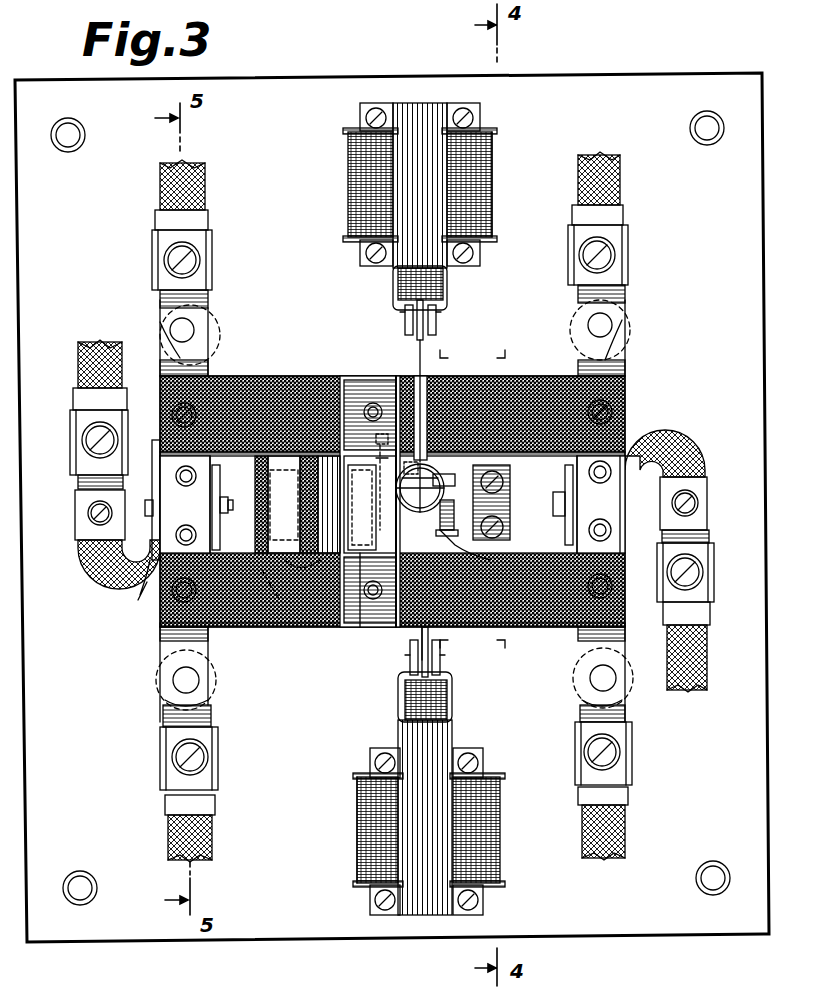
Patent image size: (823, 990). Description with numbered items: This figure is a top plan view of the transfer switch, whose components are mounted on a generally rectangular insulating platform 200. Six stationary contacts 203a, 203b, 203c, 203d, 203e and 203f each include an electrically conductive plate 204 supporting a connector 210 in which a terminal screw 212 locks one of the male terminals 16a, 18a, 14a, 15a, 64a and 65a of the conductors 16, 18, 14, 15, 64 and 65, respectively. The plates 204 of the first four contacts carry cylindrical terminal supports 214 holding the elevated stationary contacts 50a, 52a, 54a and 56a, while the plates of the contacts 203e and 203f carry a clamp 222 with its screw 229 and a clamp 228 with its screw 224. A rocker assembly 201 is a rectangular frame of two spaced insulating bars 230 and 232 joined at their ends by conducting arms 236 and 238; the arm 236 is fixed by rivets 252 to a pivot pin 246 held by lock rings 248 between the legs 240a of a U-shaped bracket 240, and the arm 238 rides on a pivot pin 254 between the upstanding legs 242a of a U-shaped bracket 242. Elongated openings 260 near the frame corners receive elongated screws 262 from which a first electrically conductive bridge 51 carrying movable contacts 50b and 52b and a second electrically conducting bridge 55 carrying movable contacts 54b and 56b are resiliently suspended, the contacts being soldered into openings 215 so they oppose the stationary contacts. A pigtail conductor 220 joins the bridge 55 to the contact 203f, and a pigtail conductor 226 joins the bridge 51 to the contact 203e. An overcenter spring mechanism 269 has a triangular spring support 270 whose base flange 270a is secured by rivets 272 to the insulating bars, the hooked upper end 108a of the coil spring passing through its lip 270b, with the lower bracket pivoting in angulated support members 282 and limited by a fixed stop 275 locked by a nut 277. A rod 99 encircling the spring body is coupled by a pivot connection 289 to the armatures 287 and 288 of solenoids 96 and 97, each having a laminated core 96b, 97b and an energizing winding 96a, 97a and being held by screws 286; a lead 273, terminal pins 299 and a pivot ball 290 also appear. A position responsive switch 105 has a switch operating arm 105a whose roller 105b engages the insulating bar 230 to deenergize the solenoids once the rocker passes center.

The insulating platform 200 is at (655, 74).
The rocker assembly 201 is at (668, 384).
The insulating bar 232 is at (272, 378).
The insulating bar 230 is at (270, 628).
The overcenter spring mechanism 269 is at (335, 378).
The spring support 270 is at (337, 620).
The base flange 270a is at (355, 628).
The lip 270b is at (421, 470).
The rivets 272 is at (370, 597).
The fixed stop 275 is at (376, 440).
The nut 277 is at (376, 458).
The rod 99 is at (421, 615).
The solenoid 97 is at (341, 164).
The energizing winding 97a is at (494, 172).
The laminated core 97b is at (420, 103).
The screws 286 is at (478, 895).
The armature 288 is at (398, 290).
The pivot connection 289 is at (438, 326).
The solenoid 96 is at (350, 808).
The energizing winding 96a is at (362, 850).
The laminated core 96b is at (425, 905).
The armature 287 is at (447, 690).
The terminal pins 299 is at (441, 664).
The conductor 14 is at (160, 180).
The male terminal 14a is at (158, 222).
The conductor 16 is at (620, 165).
The male terminal 16a is at (624, 212).
The conductor 15 is at (168, 832).
The male terminal 15a is at (165, 803).
The conductor 18 is at (628, 838).
The male terminal 18a is at (628, 800).
The conductor 64 is at (705, 645).
The male terminal 64a is at (705, 612).
The conductor 65 is at (78, 356).
The male terminal 65a is at (80, 392).
The connector 210 is at (712, 590).
The terminal screw 212 is at (86, 440).
The cylindrical terminal support 214 is at (440, 493).
The electrically conductive plate 204 is at (710, 532).
The opening 215 is at (598, 680).
The stationary contact 54a is at (208, 338).
The movable contact 54b is at (165, 342).
The second electrically conducting bridge 55 is at (210, 640).
The stationary contact 50a is at (578, 338).
The movable contact 50b is at (580, 336).
The first electrically conductive bridge 51 is at (630, 640).
The stationary contact 56a is at (210, 670).
The movable contact 56b is at (208, 712).
The stationary contact 52a is at (590, 668).
The movable contact 52b is at (584, 712).
The stationary contact 203a is at (672, 244).
The stationary contact 203b is at (670, 740).
The stationary contact 203c is at (725, 440).
The stationary contact 203d is at (122, 776).
The stationary contact 203e is at (228, 233).
The stationary contact 203f is at (66, 532).
The pigtail conductor 220 is at (102, 573).
The clamp 222 is at (705, 480).
The screw 224 is at (88, 518).
The pigtail conductor 226 is at (690, 430).
The clamp 228 is at (76, 500).
The screw 229 is at (698, 503).
The conducting arm 236 is at (155, 448).
The conducting arm 238 is at (601, 504).
The U-shaped bracket 240 is at (218, 480).
The legs 240a is at (210, 500).
The U-shaped bracket 242 is at (512, 480).
The upstanding legs 242a is at (625, 538).
The pivot pin 246 is at (140, 590).
The lock rings 248 is at (226, 514).
The rivets 252 is at (188, 545).
The pivot pin 254 is at (546, 498).
The elongated openings 260 is at (608, 595).
The elongated screws 262 is at (608, 586).
The lead 273 is at (458, 540).
The angulated support member 282 is at (368, 553).
The pivot ball 290 is at (444, 456).
The position responsive switch 105 is at (290, 450).
The switch operating arm 105a is at (272, 452).
The roller 105b is at (290, 565).
The hooked upper end 108a is at (428, 460).